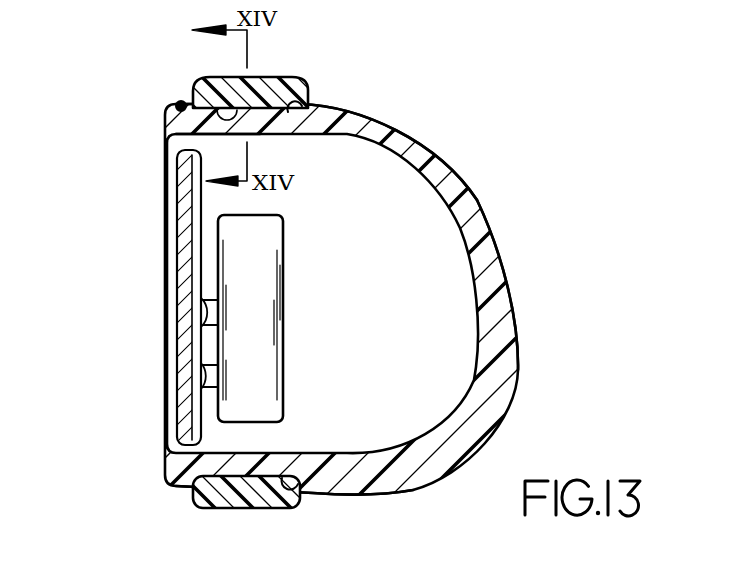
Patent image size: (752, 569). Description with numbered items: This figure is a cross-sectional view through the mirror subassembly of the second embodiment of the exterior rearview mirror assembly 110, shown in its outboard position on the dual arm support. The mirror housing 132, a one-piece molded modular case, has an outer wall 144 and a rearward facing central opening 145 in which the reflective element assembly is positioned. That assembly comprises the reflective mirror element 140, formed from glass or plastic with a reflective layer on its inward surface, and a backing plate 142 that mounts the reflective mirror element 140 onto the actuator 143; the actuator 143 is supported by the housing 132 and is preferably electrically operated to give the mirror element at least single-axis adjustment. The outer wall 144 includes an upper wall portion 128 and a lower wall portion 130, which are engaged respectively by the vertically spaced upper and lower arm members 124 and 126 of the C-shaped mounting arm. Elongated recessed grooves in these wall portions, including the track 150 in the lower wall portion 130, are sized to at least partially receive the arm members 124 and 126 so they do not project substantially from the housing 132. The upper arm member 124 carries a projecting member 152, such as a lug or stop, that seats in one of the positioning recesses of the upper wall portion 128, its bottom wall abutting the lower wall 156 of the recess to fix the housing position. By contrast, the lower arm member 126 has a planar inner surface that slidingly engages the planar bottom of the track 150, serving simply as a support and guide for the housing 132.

The exterior rearview mirror assembly 110 is at (565, 105).
The upper arm member 124 is at (268, 80).
The lower arm member 126 is at (223, 509).
The upper wall portion 128 is at (316, 104).
The lower wall portion 130 is at (343, 494).
The mirror housing 132 is at (463, 177).
The reflective mirror element 140 is at (180, 230).
The backing plate 142 is at (200, 430).
The actuator 143 is at (263, 291).
The outer wall 144 is at (403, 142).
The central opening 145 is at (178, 146).
The track 150 is at (303, 478).
The projecting member 152 is at (181, 100).
The lower wall 156 is at (295, 105).